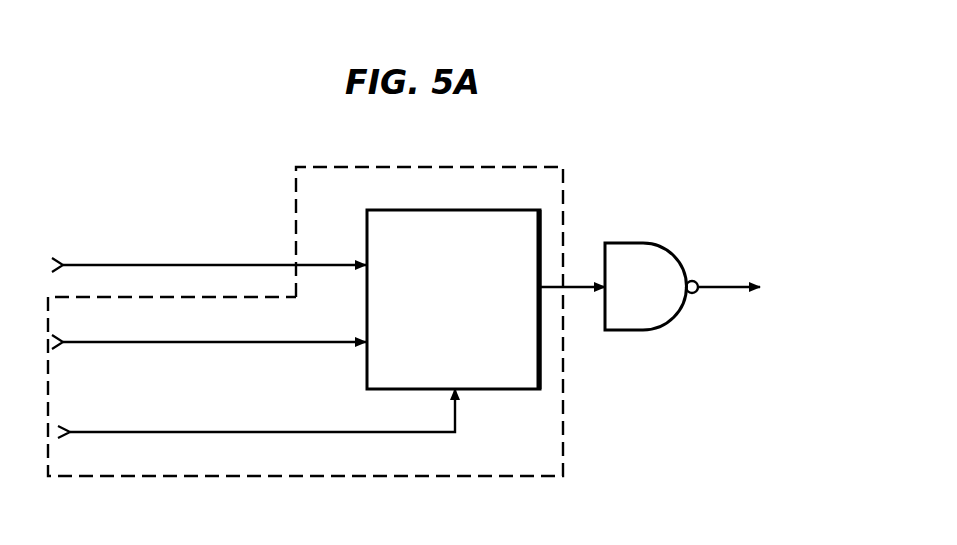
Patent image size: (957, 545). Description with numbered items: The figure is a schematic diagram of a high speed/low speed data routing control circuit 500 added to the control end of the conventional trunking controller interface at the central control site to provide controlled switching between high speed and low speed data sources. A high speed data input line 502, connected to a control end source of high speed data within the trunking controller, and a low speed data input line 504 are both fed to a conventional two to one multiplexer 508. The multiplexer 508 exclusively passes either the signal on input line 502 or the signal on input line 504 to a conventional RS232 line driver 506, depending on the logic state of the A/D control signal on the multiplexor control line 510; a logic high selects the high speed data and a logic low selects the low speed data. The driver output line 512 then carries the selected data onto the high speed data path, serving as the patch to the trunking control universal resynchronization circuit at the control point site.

The high speed/low speed data routing control circuit 500 is at (563, 440).
The high speed data input line 502 is at (77, 264).
The low speed data input line 504 is at (80, 343).
The RS232 line driver 506 is at (660, 330).
The 2 to 1 multiplexer 508 is at (436, 210).
The multiplexor control line 510 is at (90, 432).
The driver output line 512 is at (730, 283).